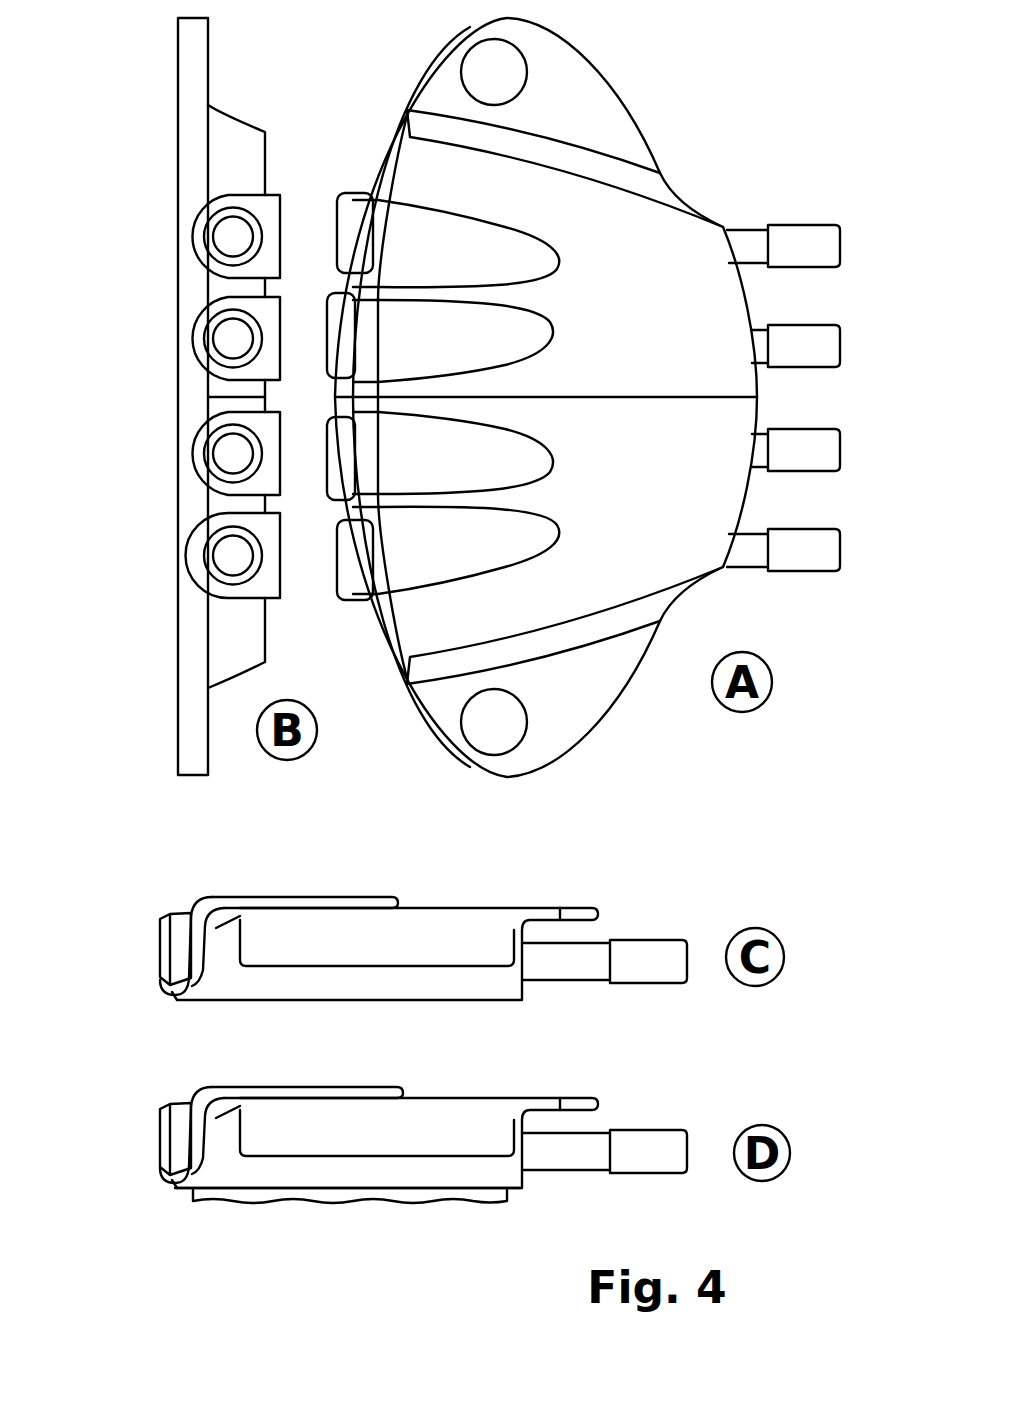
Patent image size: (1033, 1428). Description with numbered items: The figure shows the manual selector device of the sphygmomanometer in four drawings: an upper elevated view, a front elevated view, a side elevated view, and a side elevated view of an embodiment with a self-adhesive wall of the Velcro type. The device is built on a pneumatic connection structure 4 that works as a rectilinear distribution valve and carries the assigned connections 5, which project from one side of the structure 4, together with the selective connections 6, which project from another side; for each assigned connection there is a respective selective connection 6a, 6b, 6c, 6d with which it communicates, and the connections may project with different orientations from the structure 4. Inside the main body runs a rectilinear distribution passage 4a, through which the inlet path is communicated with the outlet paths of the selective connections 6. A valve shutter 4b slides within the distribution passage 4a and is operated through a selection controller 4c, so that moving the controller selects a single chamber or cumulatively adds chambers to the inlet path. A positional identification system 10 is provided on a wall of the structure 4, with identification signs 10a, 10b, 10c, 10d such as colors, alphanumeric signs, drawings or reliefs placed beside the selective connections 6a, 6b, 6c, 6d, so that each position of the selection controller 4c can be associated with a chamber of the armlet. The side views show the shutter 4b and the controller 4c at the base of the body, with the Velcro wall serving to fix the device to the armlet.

The pneumatic connection structure 4 is at (608, 322).
The rectilinear distribution passage 4a is at (493, 73).
The valve shutter 4b is at (183, 1192).
The selection controller 4c is at (367, 1198).
The assigned connections 5 is at (808, 192).
The selective connections 6 is at (325, 165).
The selective connection 6a is at (198, 543).
The selective connection 6b is at (200, 440).
The selective connection 6c is at (197, 350).
The selective connection 6d is at (200, 247).
The positional identification system 10 is at (183, 962).
The identification sign 10a is at (253, 590).
The identification sign 10b is at (262, 483).
The identification sign 10c is at (265, 310).
The identification sign 10d is at (255, 203).